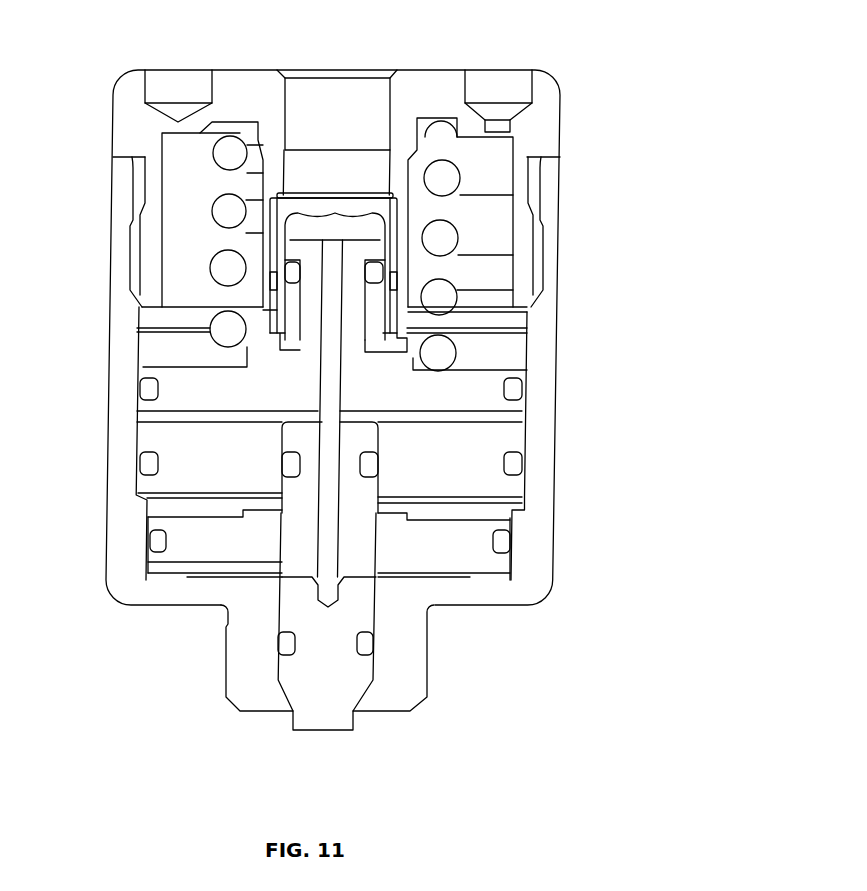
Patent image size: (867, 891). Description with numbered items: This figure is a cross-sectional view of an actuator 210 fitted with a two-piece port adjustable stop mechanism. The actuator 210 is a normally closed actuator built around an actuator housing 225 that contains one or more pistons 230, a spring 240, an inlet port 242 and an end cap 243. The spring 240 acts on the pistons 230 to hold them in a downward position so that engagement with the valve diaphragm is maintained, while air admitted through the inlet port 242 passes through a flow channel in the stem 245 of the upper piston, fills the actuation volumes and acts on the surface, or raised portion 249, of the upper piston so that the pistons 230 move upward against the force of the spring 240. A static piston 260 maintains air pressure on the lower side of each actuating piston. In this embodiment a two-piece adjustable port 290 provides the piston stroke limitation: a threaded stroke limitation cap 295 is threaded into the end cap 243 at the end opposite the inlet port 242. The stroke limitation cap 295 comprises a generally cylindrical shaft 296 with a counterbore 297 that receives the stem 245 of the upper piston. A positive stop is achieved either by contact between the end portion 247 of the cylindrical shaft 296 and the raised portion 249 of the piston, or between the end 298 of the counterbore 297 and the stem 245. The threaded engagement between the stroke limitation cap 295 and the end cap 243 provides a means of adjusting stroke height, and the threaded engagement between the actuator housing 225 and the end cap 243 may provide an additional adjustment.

The actuator 210 is at (606, 437).
The actuator housing 225 is at (120, 538).
The pistons 230 is at (173, 412).
The spring 240 is at (185, 358).
The inlet port 242 is at (347, 90).
The end cap 243 is at (552, 123).
The stem 245 is at (220, 335).
The end portion 247 is at (410, 322).
The raised portion 249 is at (417, 355).
The static piston 260 is at (487, 478).
The two-piece adjustable port 290 is at (430, 210).
The stroke limitation cap 295 is at (400, 262).
The cylindrical shaft 296 is at (385, 272).
The counterbore 297 is at (297, 233).
The end of the counterbore 298 is at (364, 194).